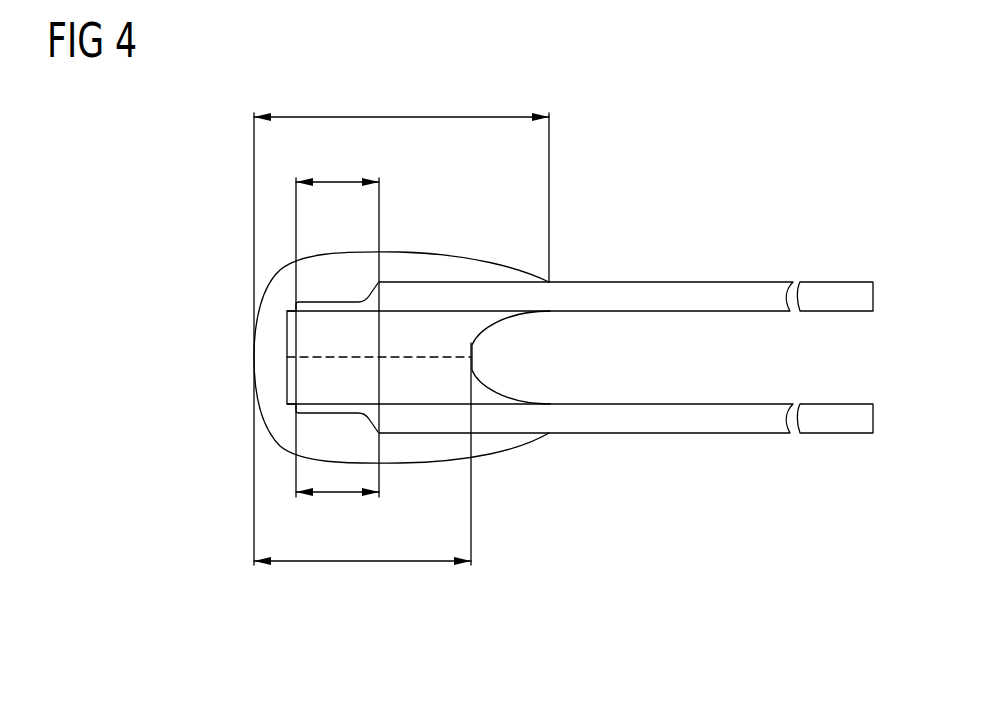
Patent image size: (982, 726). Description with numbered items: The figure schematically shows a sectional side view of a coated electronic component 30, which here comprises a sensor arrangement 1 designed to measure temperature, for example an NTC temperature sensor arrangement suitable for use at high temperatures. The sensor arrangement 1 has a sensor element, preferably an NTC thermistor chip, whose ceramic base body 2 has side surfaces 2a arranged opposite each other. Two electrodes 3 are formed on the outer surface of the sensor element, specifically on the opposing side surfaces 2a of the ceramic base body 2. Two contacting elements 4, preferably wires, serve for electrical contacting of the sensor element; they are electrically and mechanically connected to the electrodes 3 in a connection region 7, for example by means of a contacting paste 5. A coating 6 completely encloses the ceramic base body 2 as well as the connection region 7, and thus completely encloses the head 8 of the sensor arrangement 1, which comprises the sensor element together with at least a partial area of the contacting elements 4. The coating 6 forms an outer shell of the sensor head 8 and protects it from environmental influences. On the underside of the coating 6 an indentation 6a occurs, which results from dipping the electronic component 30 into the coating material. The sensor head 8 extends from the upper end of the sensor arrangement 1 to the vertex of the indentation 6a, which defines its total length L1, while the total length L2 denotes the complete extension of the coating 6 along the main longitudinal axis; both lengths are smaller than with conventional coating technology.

The sensor arrangement 1 is at (146, 378).
The coated electronic component 30 is at (460, 340).
The ceramic base body 2 is at (287, 357).
The side surfaces 2a is at (300, 301).
The electrodes 3 is at (296, 308).
The contacting elements 4 is at (637, 290).
The contacting paste 5 is at (337, 302).
The coating 6 is at (418, 464).
The indentation 6a is at (505, 364).
The connection region 7 is at (340, 180).
The sensor head 8 is at (437, 458).
The total length of the sensor head L1 is at (365, 563).
The total length of the coating L2 is at (400, 116).